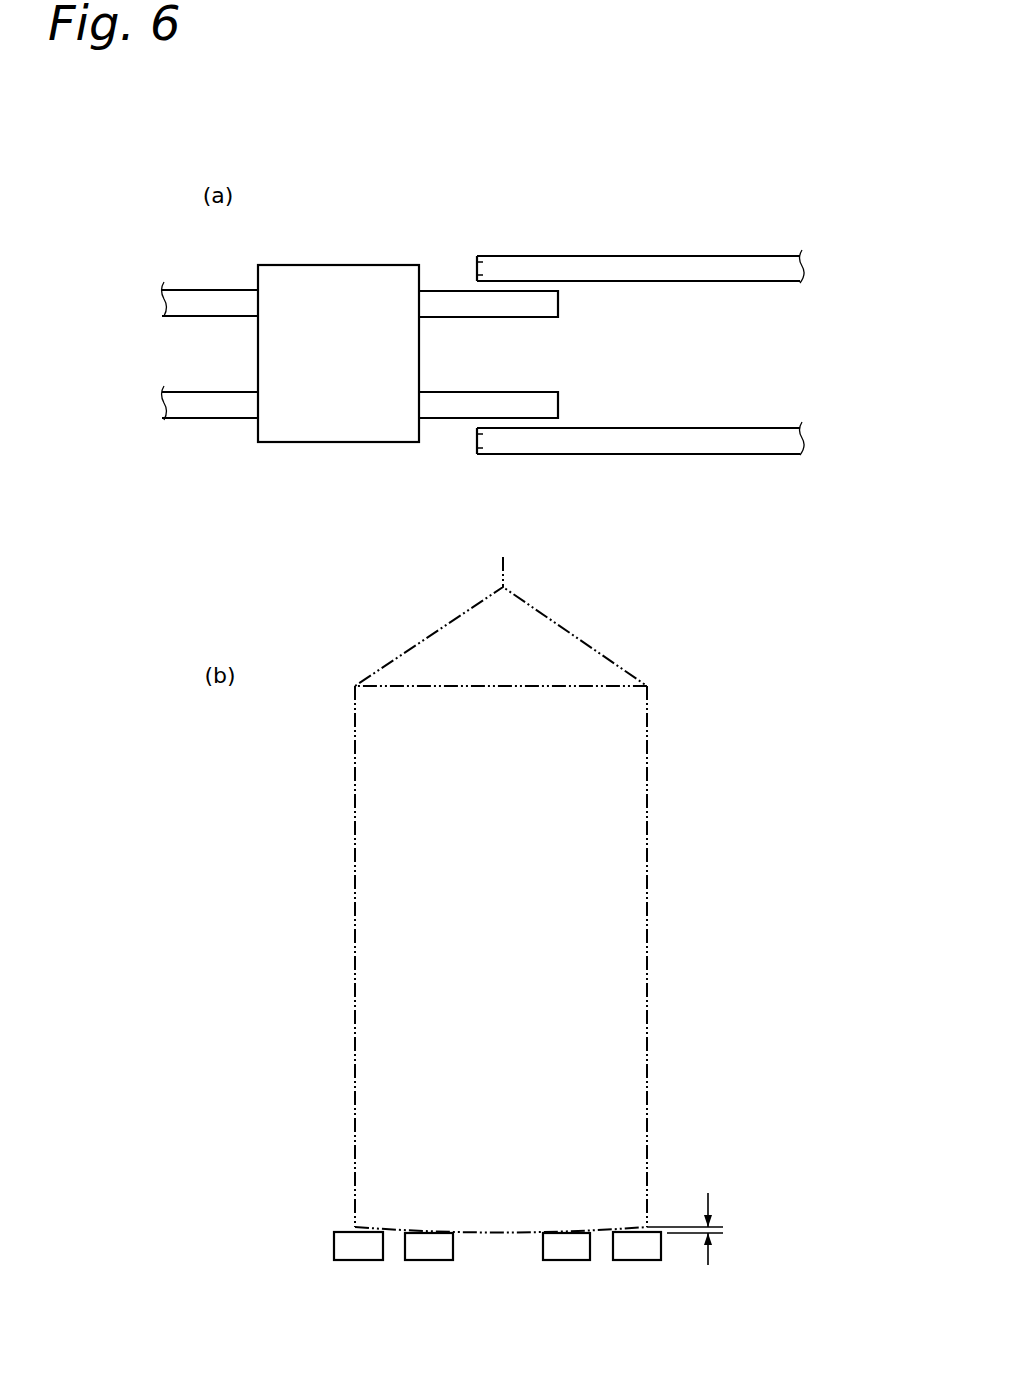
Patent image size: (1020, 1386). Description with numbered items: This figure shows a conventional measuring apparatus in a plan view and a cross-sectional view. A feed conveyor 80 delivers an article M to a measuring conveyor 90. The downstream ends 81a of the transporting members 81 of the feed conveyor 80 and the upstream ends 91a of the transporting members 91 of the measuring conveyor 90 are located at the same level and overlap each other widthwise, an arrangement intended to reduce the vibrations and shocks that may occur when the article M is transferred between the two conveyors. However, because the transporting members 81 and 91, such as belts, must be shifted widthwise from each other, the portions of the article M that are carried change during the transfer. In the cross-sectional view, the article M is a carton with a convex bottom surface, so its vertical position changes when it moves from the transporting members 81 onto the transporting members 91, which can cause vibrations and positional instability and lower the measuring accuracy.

The feed conveyor 80 is at (265, 224).
The transporting members 81 is at (215, 300).
The downstream ends 81a is at (558, 297).
The measuring conveyor 90 is at (610, 226).
The transporting members 91 is at (665, 268).
The upstream ends 91a is at (478, 268).
The article M is at (343, 432).